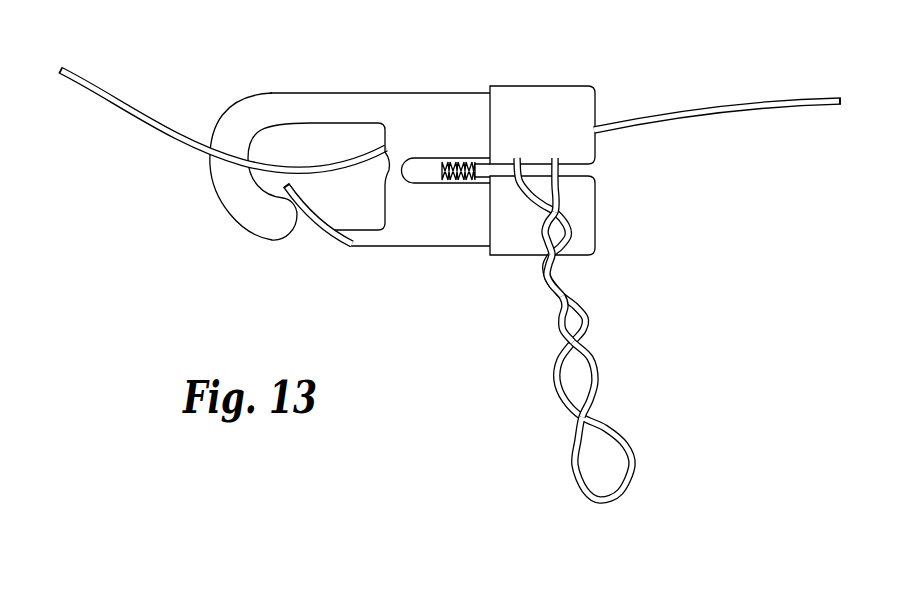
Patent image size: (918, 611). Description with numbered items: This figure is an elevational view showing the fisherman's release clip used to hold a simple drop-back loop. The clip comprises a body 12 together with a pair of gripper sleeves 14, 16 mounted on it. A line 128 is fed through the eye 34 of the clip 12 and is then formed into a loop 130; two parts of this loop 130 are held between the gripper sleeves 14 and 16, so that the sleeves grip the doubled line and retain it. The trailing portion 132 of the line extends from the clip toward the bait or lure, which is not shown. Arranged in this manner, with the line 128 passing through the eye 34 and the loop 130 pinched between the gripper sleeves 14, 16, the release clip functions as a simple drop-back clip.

The body 12 is at (422, 92).
The gripper sleeve 14 is at (557, 100).
The gripper sleeve 16 is at (512, 243).
The eye 34 is at (290, 143).
The line 128 is at (93, 90).
The loop 130 is at (625, 440).
The trailing portion 132 is at (700, 117).